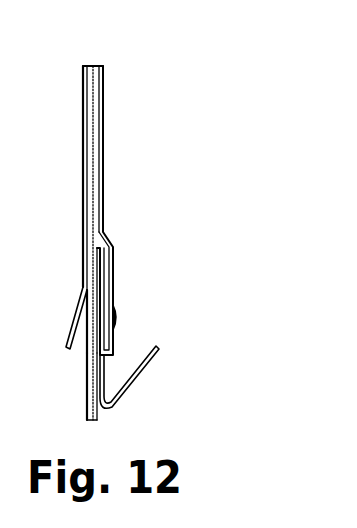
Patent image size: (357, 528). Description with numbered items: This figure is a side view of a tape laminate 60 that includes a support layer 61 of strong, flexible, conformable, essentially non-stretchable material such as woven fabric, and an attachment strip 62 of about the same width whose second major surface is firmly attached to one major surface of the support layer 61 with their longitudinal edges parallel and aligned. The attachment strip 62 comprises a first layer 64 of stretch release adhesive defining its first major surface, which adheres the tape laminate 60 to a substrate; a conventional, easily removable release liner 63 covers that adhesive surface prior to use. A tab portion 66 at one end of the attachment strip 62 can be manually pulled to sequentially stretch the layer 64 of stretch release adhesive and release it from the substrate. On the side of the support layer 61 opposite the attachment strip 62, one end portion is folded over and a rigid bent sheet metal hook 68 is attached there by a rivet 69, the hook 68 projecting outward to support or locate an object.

The tape laminate 60 is at (140, 77).
The support layer 61 is at (100, 105).
The attachment strip 62 is at (93, 172).
The release liner 63 is at (78, 310).
The first layer of stretch release adhesive 64 is at (87, 130).
The tab portion 66 is at (87, 389).
The hook 68 is at (152, 358).
The rivet 69 is at (117, 318).